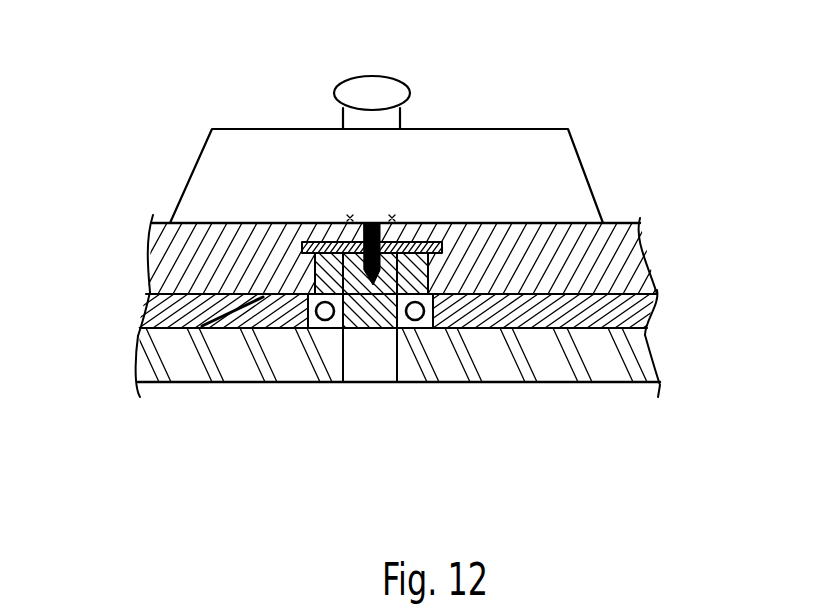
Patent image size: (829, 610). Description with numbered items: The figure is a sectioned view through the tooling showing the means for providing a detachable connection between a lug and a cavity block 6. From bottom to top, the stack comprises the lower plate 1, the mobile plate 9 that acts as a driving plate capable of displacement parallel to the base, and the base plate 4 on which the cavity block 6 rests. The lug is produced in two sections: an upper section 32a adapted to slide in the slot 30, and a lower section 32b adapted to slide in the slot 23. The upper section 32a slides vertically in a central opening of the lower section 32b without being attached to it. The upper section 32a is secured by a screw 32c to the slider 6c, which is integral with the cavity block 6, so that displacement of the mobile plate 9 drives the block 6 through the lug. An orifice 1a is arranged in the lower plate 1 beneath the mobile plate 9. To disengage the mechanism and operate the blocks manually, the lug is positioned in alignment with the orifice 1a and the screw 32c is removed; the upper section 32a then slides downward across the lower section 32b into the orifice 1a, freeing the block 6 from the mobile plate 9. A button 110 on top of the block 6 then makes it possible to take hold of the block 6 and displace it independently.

The button 110 is at (375, 88).
The cavity block 6 is at (568, 137).
The screw 32c is at (373, 222).
The slider 6c is at (437, 224).
The base plate 4 is at (630, 265).
The mobile plate 9 is at (632, 317).
The lower plate 1 is at (613, 368).
The slot 30 is at (312, 282).
The slot 23 is at (268, 327).
The upper section of the lug 32a is at (357, 315).
The lower section of the lug 32b is at (423, 320).
The orifice 1a is at (373, 365).